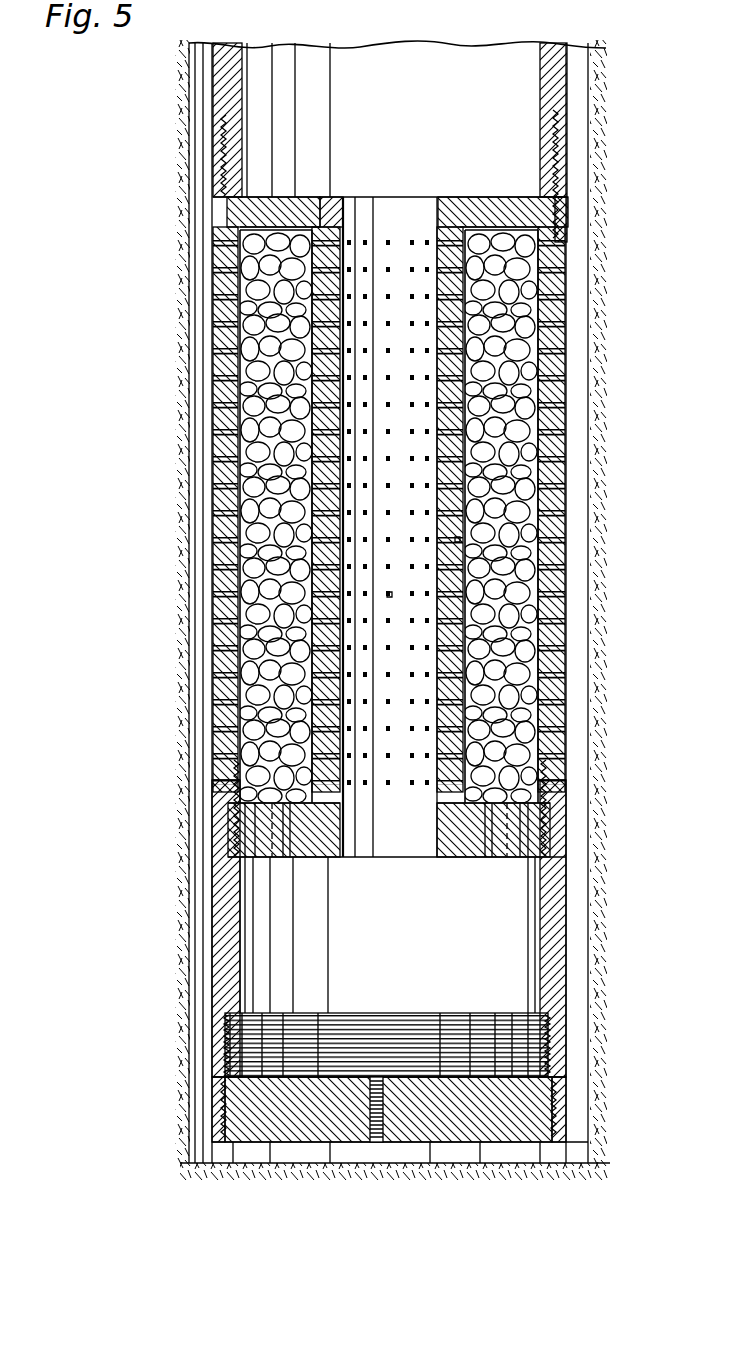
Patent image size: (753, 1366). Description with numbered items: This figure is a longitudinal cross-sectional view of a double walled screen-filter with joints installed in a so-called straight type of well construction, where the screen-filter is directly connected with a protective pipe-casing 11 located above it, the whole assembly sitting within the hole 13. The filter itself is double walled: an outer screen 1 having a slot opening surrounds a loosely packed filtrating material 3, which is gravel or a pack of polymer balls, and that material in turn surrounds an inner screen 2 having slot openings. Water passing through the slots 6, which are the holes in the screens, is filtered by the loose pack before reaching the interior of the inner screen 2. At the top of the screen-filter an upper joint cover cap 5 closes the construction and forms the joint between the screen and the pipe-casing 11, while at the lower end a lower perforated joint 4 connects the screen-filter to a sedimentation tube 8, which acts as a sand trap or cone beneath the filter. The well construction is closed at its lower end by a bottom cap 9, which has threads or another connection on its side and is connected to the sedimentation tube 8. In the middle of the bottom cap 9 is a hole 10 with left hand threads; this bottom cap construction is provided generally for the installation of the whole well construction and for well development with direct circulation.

The outer screen 1 is at (555, 658).
The inner screen 2 is at (500, 460).
The loosely packed filtrating material 3 is at (517, 345).
The lower perforated joint 4 is at (557, 822).
The upper joint cover cap 5 is at (528, 210).
The slots 6 is at (390, 595).
The sedimentation tube 8 is at (222, 950).
The bottom cap 9 is at (518, 1115).
The hole with left hand threads 10 is at (385, 1142).
The protective pipe-casing 11 is at (553, 77).
The hole 13 is at (598, 502).